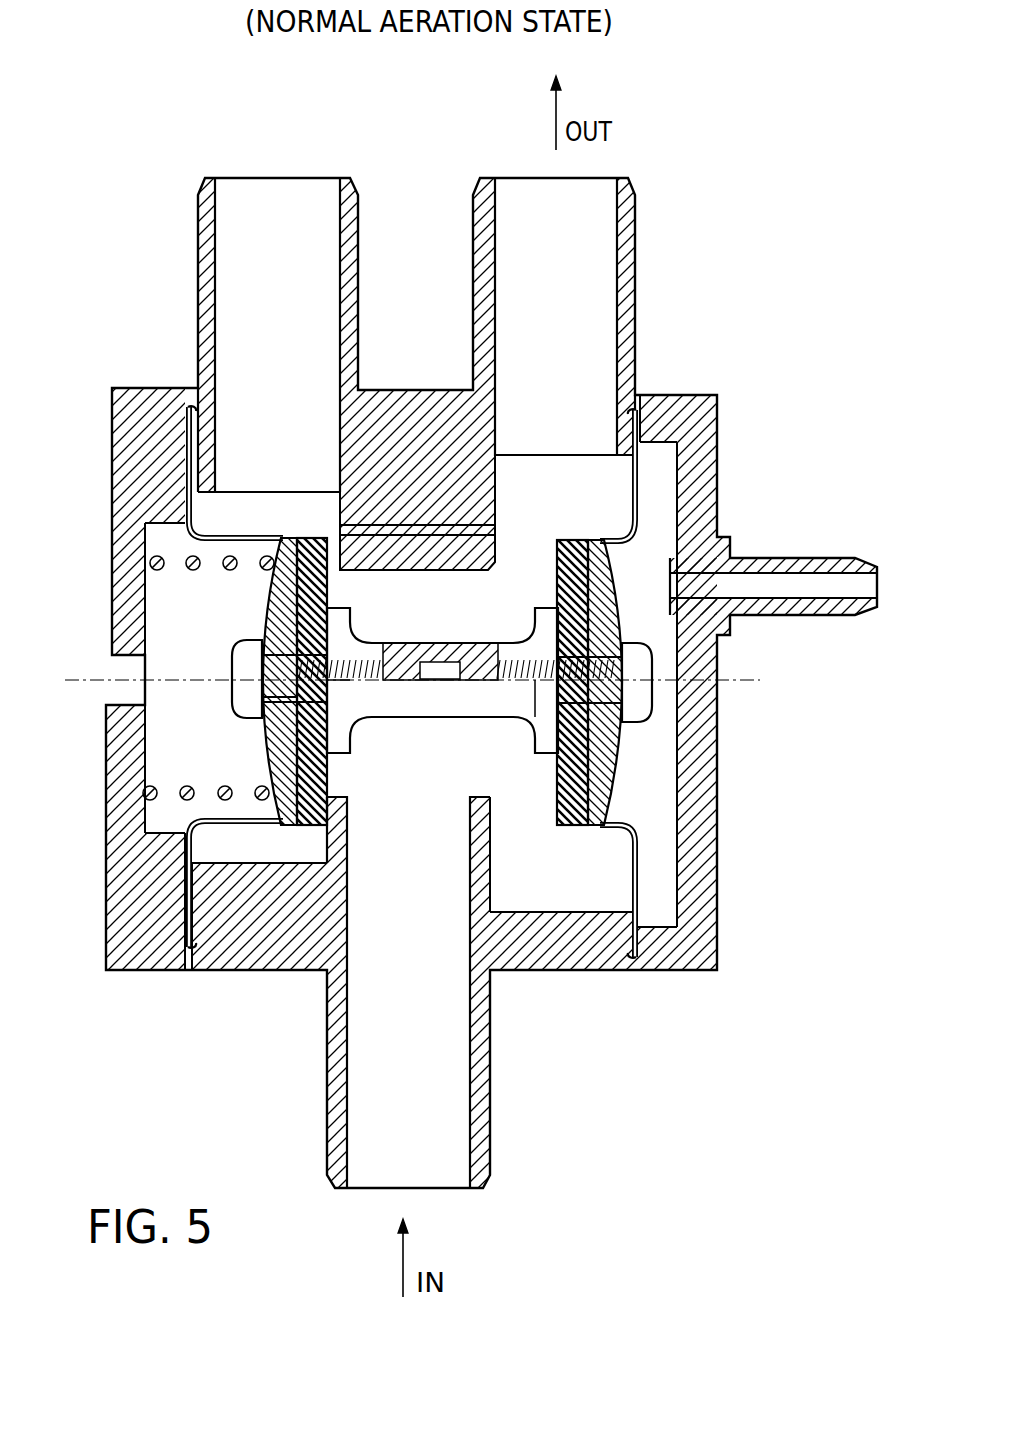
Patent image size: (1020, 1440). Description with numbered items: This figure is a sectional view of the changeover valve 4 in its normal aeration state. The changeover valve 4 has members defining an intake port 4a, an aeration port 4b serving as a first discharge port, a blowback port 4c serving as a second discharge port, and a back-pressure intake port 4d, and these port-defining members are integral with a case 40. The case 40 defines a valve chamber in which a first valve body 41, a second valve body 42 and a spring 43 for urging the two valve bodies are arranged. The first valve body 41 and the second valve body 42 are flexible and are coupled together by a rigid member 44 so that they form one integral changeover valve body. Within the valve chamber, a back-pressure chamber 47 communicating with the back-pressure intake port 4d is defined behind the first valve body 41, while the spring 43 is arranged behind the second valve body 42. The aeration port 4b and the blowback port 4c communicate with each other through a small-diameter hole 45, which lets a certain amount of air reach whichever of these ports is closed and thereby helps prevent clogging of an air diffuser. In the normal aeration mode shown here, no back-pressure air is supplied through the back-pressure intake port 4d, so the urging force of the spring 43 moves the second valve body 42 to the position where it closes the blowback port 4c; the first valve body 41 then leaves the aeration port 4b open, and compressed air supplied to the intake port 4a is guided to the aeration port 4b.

The changeover valve 4 is at (708, 384).
The intake port 4a is at (492, 1092).
The aeration port 4b is at (636, 232).
The blowback port 4c is at (198, 274).
The back-pressure intake port 4d is at (780, 556).
The case 40 is at (120, 433).
The first valve body 41 is at (606, 769).
The second valve body 42 is at (262, 748).
The spring 43 is at (193, 572).
The rigid member 44 is at (377, 708).
The small-diameter hole 45 is at (497, 527).
The back-pressure chamber 47 is at (660, 835).